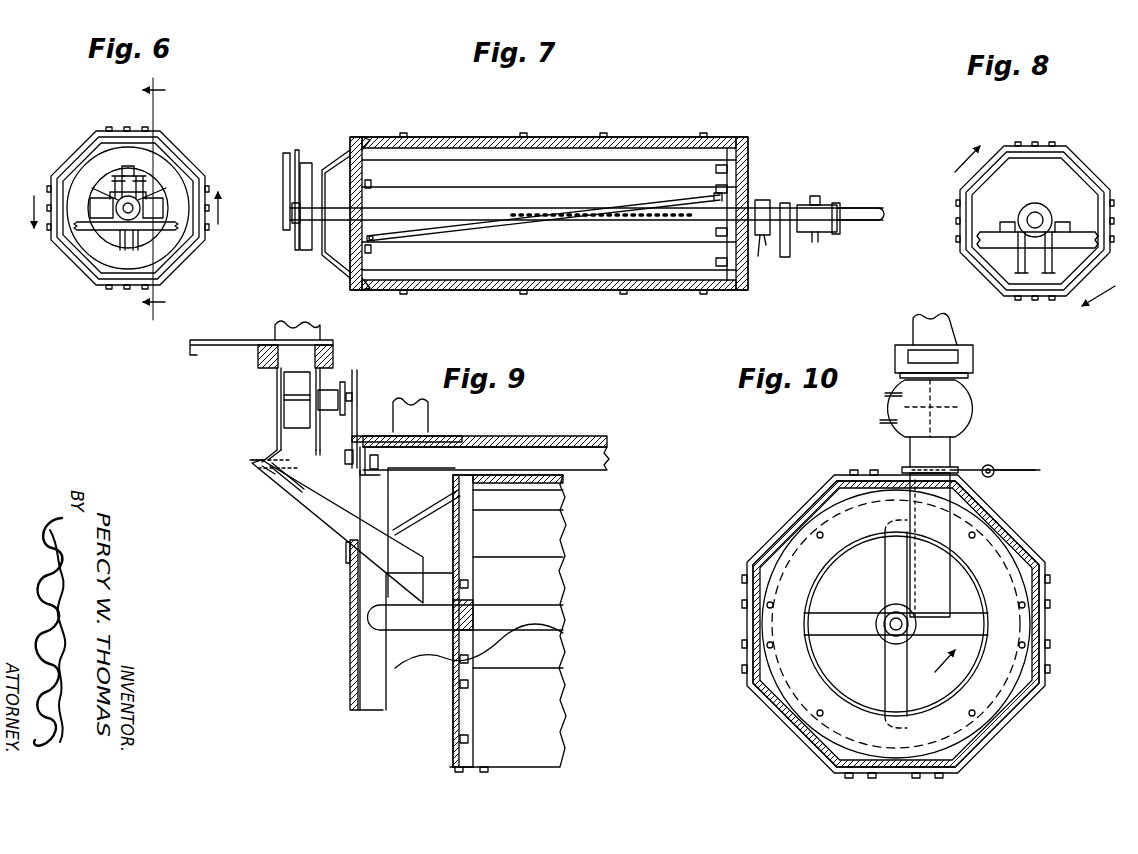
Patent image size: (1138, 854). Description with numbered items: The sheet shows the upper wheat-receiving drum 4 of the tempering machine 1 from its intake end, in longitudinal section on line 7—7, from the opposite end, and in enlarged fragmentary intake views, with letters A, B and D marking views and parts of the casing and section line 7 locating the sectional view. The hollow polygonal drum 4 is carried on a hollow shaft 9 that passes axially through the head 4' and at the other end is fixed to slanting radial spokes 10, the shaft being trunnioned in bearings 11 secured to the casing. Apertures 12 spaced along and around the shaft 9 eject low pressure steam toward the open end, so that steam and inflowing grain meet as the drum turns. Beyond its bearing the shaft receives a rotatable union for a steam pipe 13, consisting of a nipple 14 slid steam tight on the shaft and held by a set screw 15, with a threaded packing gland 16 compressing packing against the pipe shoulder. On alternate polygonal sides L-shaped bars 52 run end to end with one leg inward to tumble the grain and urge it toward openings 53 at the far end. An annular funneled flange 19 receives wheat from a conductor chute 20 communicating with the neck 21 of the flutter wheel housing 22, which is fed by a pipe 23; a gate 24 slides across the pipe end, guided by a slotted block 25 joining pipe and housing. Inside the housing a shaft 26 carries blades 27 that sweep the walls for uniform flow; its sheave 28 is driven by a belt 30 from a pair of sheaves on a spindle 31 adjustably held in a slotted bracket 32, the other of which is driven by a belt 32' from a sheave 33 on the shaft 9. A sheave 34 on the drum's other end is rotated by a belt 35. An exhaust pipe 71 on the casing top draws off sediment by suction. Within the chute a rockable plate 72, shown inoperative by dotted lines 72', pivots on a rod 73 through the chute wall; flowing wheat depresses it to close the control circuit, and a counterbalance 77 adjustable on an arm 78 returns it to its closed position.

In FIG. 9, the supporting post 1 is at (350, 617).
In FIG. 6, the drum 4 is at (128, 208).
In FIG. 7, the drum 4 is at (549, 200).
In FIG. 8, the drum 4 is at (1035, 220).
In FIG. 9, the drum 4 is at (480, 623).
In FIG. 10, the drum 4 is at (896, 624).
In FIG. 7, the head 4' is at (750, 213).
In FIG. 8, the head 4' is at (957, 209).
In FIG. 6, the section line 7- 7 is at (161, 199).
In FIG. 6, the hollow shaft 9 is at (141, 207).
In FIG. 7, the hollow shaft 9 is at (440, 212).
In FIG. 8, the hollow shaft 9 is at (1042, 219).
In FIG. 9, the hollow shaft 9 is at (540, 616).
In FIG. 10, the hollow shaft 9 is at (882, 632).
In FIG. 6, the spokes 10 is at (114, 196).
In FIG. 7, the spokes 10 is at (363, 202).
In FIG. 9, the spokes 10 is at (453, 598).
In FIG. 10, the spokes 10 is at (852, 608).
In FIG. 6, the bearings 11 is at (118, 228).
In FIG. 7, the bearings 11 is at (305, 208).
In FIG. 8, the bearings 11 is at (1032, 206).
In FIG. 7, the apertures 12 is at (600, 223).
In FIG. 7, the steam pipe 13 is at (864, 213).
In FIG. 7, the nipple 14 is at (828, 238).
In FIG. 7, the set screw 15 is at (817, 197).
In FIG. 7, the packing gland 16 is at (838, 210).
In FIG. 6, the annular funneled flange 19 is at (170, 250).
In FIG. 7, the annular funneled flange 19 is at (333, 253).
In FIG. 9, the annular funneled flange 19 is at (430, 705).
In FIG. 10, the annular funneled flange 19 is at (786, 592).
In FIG. 9, the conductor chute 20 is at (333, 508).
In FIG. 10, the conductor chute 20 is at (934, 556).
In FIG. 9, the neck 21 is at (290, 448).
In FIG. 10, the neck 21 is at (930, 447).
In FIG. 9, the flutter wheel housing 22 is at (278, 412).
In FIG. 10, the flutter wheel housing 22 is at (958, 400).
In FIG. 9, the pipe 23 is at (290, 330).
In FIG. 10, the pipe 23 is at (915, 328).
In FIG. 9, the gate 24 is at (197, 345).
In FIG. 10, the gate 24 is at (930, 352).
In FIG. 9, the block 25 is at (258, 357).
In FIG. 10, the block 25 is at (966, 368).
In FIG. 9, the shaft 26 is at (326, 392).
In FIG. 9, the blades 27 is at (292, 386).
In FIG. 10, the blades 27 is at (938, 405).
In FIG. 9, the sheave 28 is at (349, 386).
In FIG. 9, the belt 30 is at (353, 397).
In FIG. 10, the belt 30 is at (888, 420).
In FIG. 9, the spindle 31 is at (358, 404).
In FIG. 7, the slotted bracket 32 is at (269, 191).
In FIG. 9, the slotted bracket 32 is at (350, 455).
In FIG. 6, the belt 32' is at (129, 160).
In FIG. 6, the sheave 33 is at (146, 198).
In FIG. 7, the sheave 33 is at (290, 205).
In FIG. 7, the sheave 34 is at (813, 232).
In FIG. 8, the sheave 34 is at (1053, 225).
In FIG. 7, the belt 35 is at (786, 258).
In FIG. 8, the belt 35 is at (1047, 268).
In FIG. 7, the L-shaped bar 52 is at (580, 152).
In FIG. 9, the L-shaped bar 52 is at (550, 500).
In FIG. 7, the openings 53 is at (716, 234).
In FIG. 9, the exhaust pipe 71 is at (430, 410).
In FIG. 9, the rockable plate 72 is at (257, 458).
In FIG. 9, the dotted lines 72' is at (275, 492).
In FIG. 9, the rod 73 is at (262, 470).
In FIG. 10, the rod 73 is at (955, 468).
In FIG. 10, the counterbalance 77 is at (1000, 469).
In FIG. 10, the arm 78 is at (996, 472).
In FIG. 7, the direction A is at (310, 164).
In FIG. 9, the direction A is at (378, 488).
In FIG. 9, the plate B is at (588, 456).
In FIG. 6, the direction D is at (106, 232).
In FIG. 7, the direction D is at (296, 232).
In FIG. 8, the direction D is at (1005, 240).
In FIG. 9, the direction D is at (365, 453).